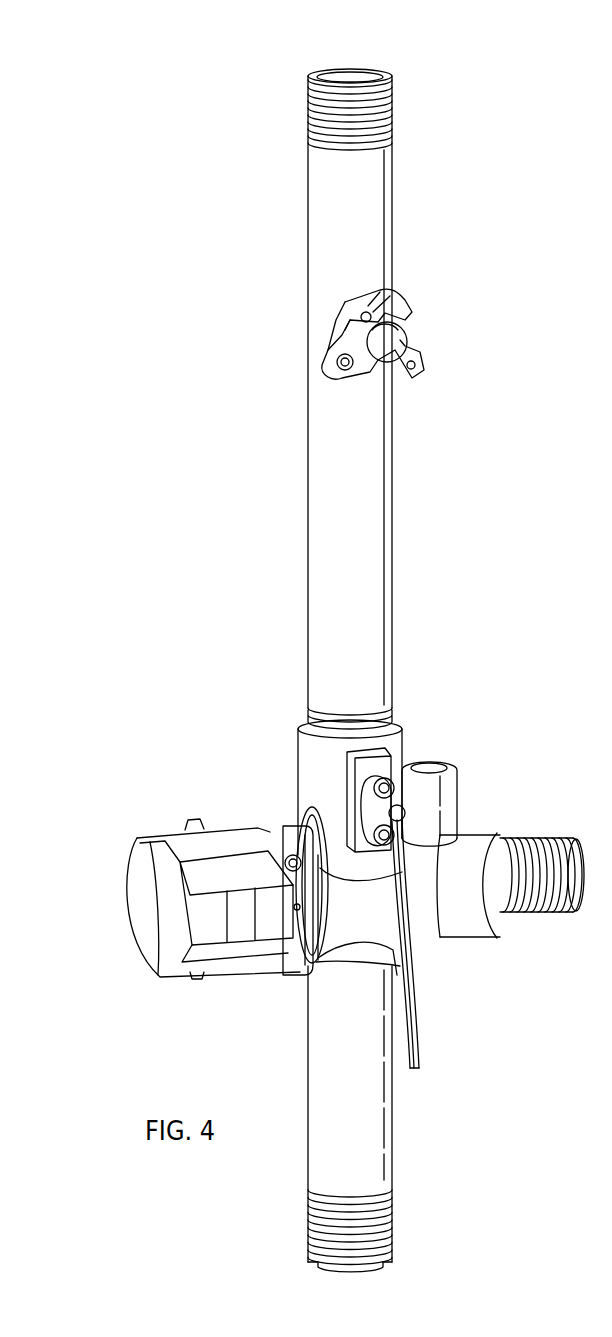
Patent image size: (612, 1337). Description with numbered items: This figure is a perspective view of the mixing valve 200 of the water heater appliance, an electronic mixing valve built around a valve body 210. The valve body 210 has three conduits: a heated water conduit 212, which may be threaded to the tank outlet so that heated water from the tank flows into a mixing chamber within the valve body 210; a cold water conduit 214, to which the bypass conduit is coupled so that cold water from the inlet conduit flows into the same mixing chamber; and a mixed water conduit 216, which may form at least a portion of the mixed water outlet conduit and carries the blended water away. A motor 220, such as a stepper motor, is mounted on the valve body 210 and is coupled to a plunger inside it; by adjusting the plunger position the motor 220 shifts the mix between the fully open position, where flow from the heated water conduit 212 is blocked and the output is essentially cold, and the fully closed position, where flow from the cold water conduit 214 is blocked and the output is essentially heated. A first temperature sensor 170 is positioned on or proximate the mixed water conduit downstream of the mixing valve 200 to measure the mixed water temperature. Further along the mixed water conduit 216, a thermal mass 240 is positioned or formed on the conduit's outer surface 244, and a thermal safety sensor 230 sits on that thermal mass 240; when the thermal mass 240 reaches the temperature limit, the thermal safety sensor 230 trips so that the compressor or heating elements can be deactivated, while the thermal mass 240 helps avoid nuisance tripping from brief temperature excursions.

The first temperature sensor 170 is at (380, 805).
The mixing valve 200 is at (265, 792).
The valve body 210 is at (410, 975).
The heated water conduit 212 is at (362, 1142).
The cold water conduit 214 is at (498, 855).
The mixed water conduit 216 is at (398, 377).
The motor 220 is at (148, 907).
The thermal safety sensor 230 is at (371, 354).
The thermal mass 240 is at (330, 362).
The outer surface 244 is at (352, 72).